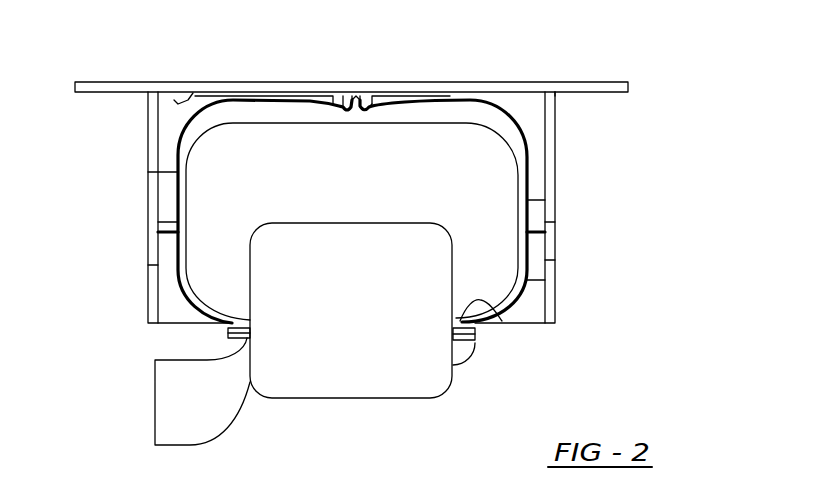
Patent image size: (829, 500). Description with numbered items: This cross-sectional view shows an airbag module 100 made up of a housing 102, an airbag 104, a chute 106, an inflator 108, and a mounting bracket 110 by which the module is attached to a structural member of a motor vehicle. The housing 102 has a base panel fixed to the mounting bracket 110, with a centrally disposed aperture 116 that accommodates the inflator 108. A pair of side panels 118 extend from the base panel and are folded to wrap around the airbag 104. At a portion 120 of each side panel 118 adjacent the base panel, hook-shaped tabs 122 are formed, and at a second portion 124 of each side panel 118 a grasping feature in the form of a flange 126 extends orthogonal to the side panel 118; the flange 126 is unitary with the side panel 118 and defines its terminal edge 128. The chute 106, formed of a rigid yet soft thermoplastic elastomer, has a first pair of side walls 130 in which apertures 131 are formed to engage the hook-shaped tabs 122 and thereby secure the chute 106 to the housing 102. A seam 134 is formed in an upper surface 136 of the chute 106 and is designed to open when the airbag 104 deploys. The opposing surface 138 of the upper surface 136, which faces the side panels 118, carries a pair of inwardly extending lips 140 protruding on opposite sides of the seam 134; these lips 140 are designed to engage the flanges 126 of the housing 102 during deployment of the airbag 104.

The airbag module 100 is at (402, 419).
The housing 102 is at (530, 178).
The airbag 104 is at (373, 190).
The chute 106 is at (598, 82).
The inflator 108 is at (363, 317).
The mounting bracket 110 is at (202, 417).
The aperture 116 is at (487, 311).
The side panels 118 is at (148, 172).
The portion of side panel 120 is at (182, 293).
The hook-shaped tabs 122 is at (148, 238).
The second portion of side panel 124 is at (252, 100).
The flange 126 is at (344, 105).
The terminal edge 128 is at (362, 105).
The first pair of side walls 130 is at (148, 130).
The apertures 131 is at (547, 222).
The seam 134 is at (353, 100).
The upper surface 136 is at (530, 82).
The opposing surface 138 is at (174, 100).
The lips 140 is at (332, 100).